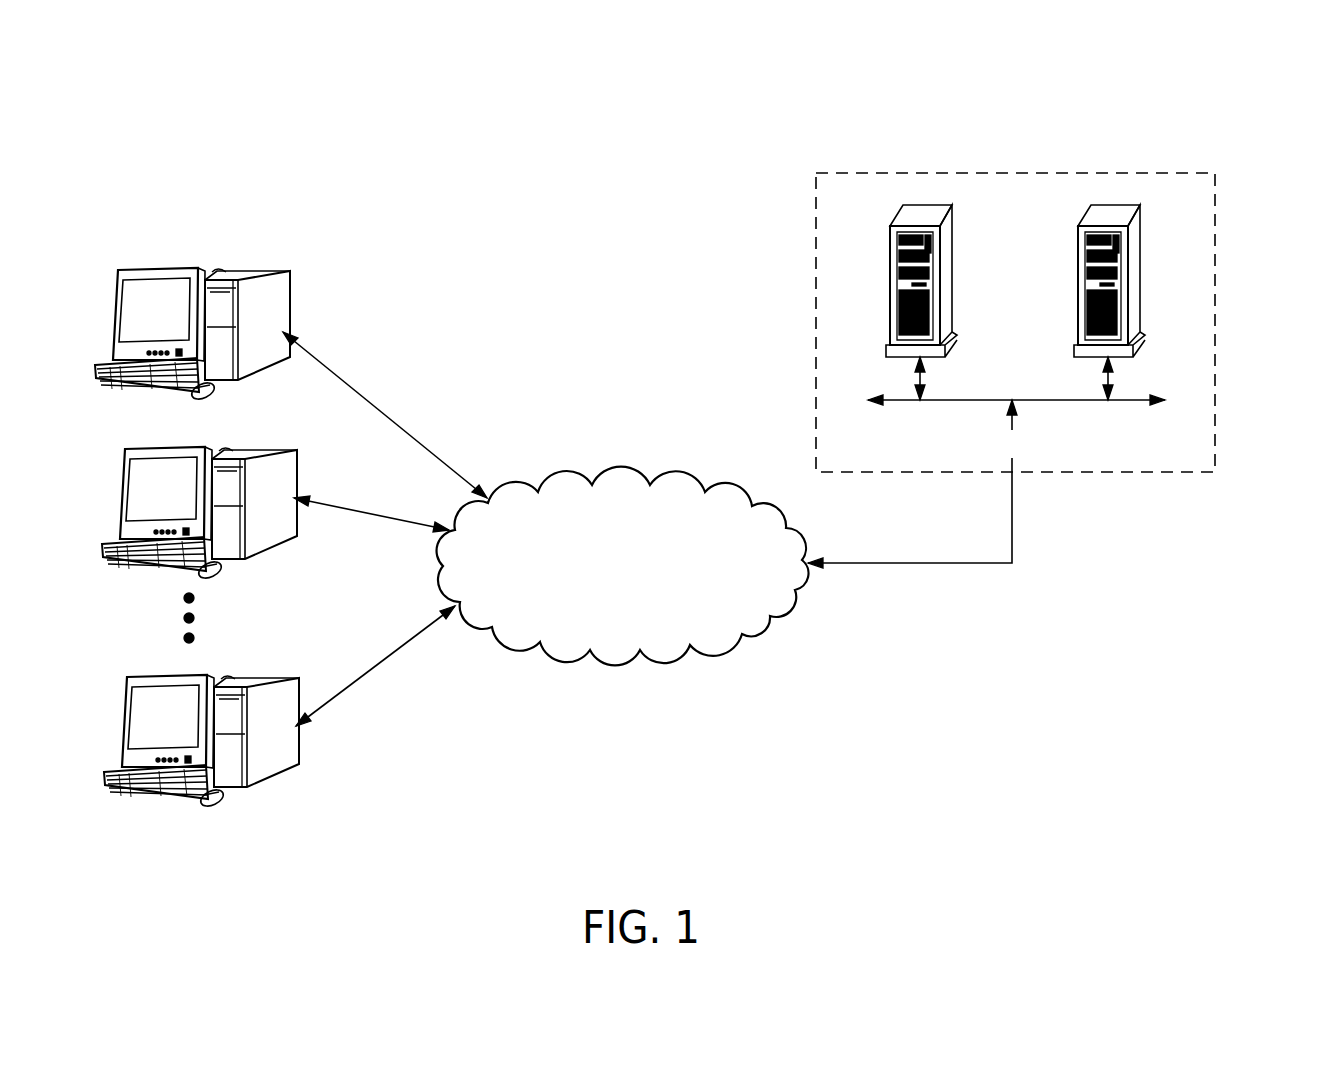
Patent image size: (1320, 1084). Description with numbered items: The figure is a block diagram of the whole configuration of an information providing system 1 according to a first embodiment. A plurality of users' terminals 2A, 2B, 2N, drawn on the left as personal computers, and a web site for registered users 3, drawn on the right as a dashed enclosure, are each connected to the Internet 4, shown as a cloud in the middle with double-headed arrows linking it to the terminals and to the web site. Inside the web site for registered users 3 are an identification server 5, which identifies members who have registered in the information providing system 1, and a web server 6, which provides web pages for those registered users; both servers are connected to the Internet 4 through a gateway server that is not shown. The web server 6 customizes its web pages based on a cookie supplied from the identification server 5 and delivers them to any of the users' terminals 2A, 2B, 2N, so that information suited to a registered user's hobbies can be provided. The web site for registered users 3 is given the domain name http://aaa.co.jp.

The information providing system 1 is at (1070, 625).
The user's terminal 2A is at (118, 319).
The user's terminal 2B is at (125, 499).
The user's terminal 2N is at (126, 727).
The web site for registered users 3 is at (855, 170).
The Internet 4 is at (702, 650).
The identification server 5 is at (917, 205).
The web server 6 is at (1115, 205).